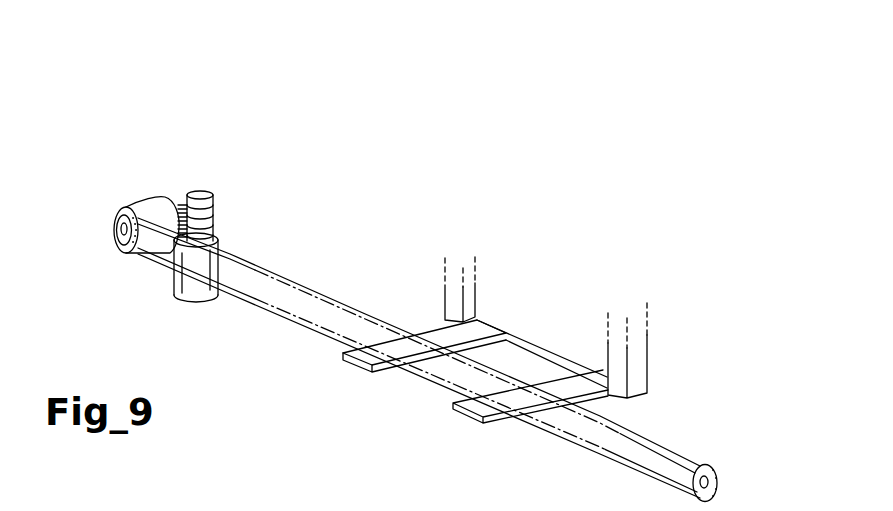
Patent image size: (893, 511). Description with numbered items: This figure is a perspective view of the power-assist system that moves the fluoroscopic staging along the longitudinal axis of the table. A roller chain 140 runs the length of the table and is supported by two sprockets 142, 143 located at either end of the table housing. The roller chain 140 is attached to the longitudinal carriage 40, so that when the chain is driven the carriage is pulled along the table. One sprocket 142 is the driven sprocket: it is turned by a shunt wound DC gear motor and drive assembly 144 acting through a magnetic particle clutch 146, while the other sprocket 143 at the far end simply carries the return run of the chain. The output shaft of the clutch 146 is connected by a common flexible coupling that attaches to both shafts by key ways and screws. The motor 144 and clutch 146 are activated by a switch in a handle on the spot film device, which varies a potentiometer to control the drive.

The longitudinal carriage 40 is at (435, 332).
The roller chain 140 is at (330, 297).
The sprocket 142 is at (113, 212).
The sprocket 143 is at (723, 477).
The shunt wound DC gear motor and drive assembly 144 is at (173, 293).
The magnetic particle clutch 146 is at (155, 195).